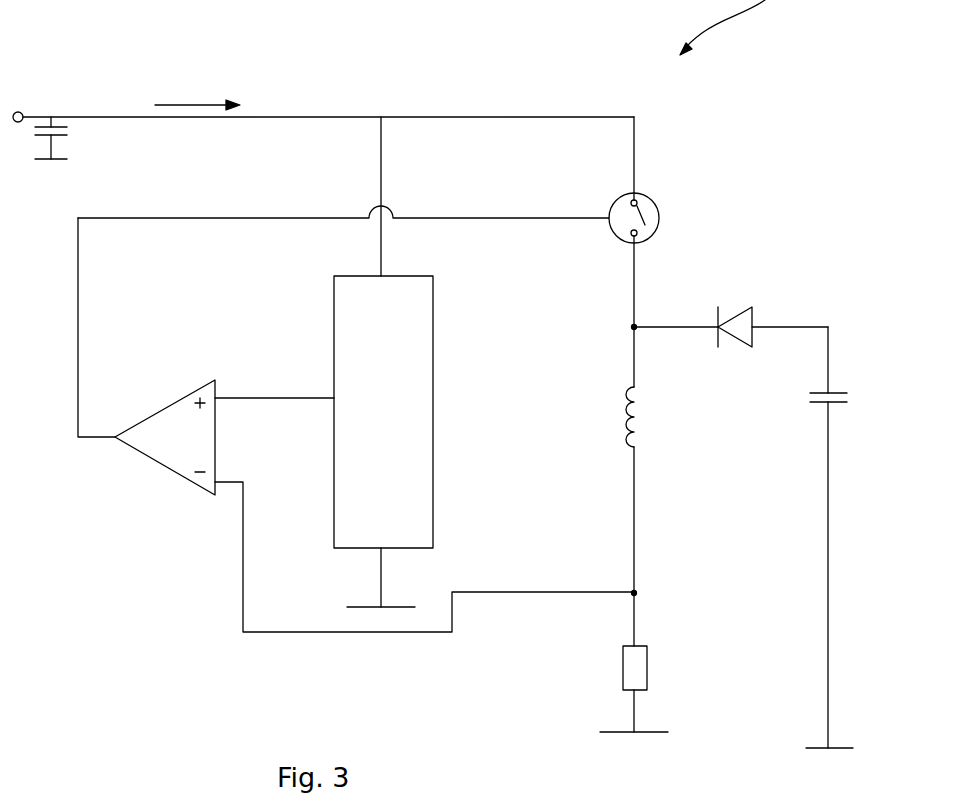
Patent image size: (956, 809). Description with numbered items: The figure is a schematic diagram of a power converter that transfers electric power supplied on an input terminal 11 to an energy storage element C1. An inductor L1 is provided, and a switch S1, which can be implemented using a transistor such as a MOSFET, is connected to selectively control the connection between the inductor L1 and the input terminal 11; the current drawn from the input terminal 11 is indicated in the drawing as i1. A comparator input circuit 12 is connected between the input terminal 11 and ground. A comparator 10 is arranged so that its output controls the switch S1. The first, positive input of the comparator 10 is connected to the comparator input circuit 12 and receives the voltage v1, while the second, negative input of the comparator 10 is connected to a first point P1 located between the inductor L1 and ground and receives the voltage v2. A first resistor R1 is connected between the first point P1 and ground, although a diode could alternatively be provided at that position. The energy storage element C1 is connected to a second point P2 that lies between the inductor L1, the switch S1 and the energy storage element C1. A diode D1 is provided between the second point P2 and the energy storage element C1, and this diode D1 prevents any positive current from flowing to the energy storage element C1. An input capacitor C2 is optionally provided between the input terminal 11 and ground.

The comparator 10 is at (158, 467).
The input terminal 11 is at (20, 111).
The comparator input circuit 12 is at (334, 313).
The energy storage element C1 is at (836, 403).
The input capacitor C2 is at (60, 135).
The diode D1 is at (753, 311).
The inductor L1 is at (630, 393).
The first resistor R1 is at (647, 670).
The switch S1 is at (658, 208).
The first point P1 is at (636, 592).
The second point P2 is at (636, 325).
The current i1 is at (197, 91).
The voltage v1 is at (274, 387).
The voltage v2 is at (424, 543).